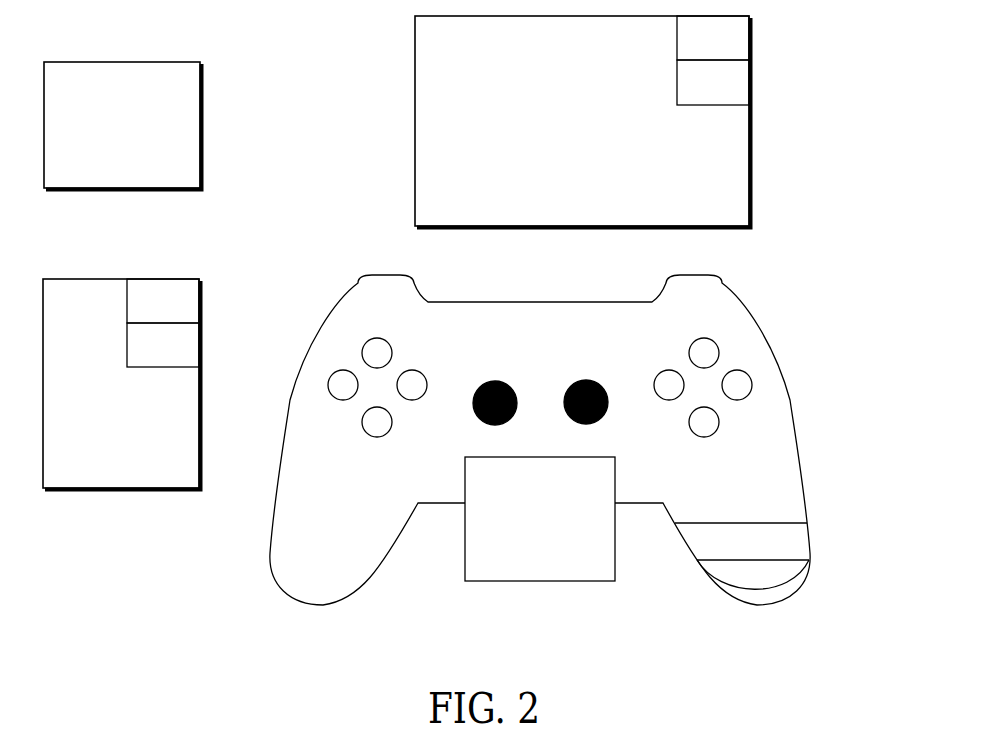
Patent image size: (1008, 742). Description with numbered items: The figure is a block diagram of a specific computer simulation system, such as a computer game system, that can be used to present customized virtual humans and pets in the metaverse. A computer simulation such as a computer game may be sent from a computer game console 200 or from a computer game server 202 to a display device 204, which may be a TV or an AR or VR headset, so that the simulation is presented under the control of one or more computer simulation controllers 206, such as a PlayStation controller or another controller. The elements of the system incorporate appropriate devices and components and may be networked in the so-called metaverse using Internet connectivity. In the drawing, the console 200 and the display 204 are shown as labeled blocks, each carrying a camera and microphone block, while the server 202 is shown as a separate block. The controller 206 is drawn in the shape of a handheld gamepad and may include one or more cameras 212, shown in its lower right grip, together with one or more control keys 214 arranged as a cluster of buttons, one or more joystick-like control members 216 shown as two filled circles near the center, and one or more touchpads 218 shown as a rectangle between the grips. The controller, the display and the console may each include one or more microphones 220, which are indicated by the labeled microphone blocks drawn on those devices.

The computer game console 200 is at (120, 490).
The computer game server 202 is at (200, 124).
The display device 204 is at (750, 117).
The computer simulation controller 206 is at (199, 299).
The camera 212 is at (759, 603).
The control key 214 is at (717, 344).
The joystick-like control member 216 is at (586, 380).
The touchpad 218 is at (503, 547).
The microphone 220 is at (750, 35).